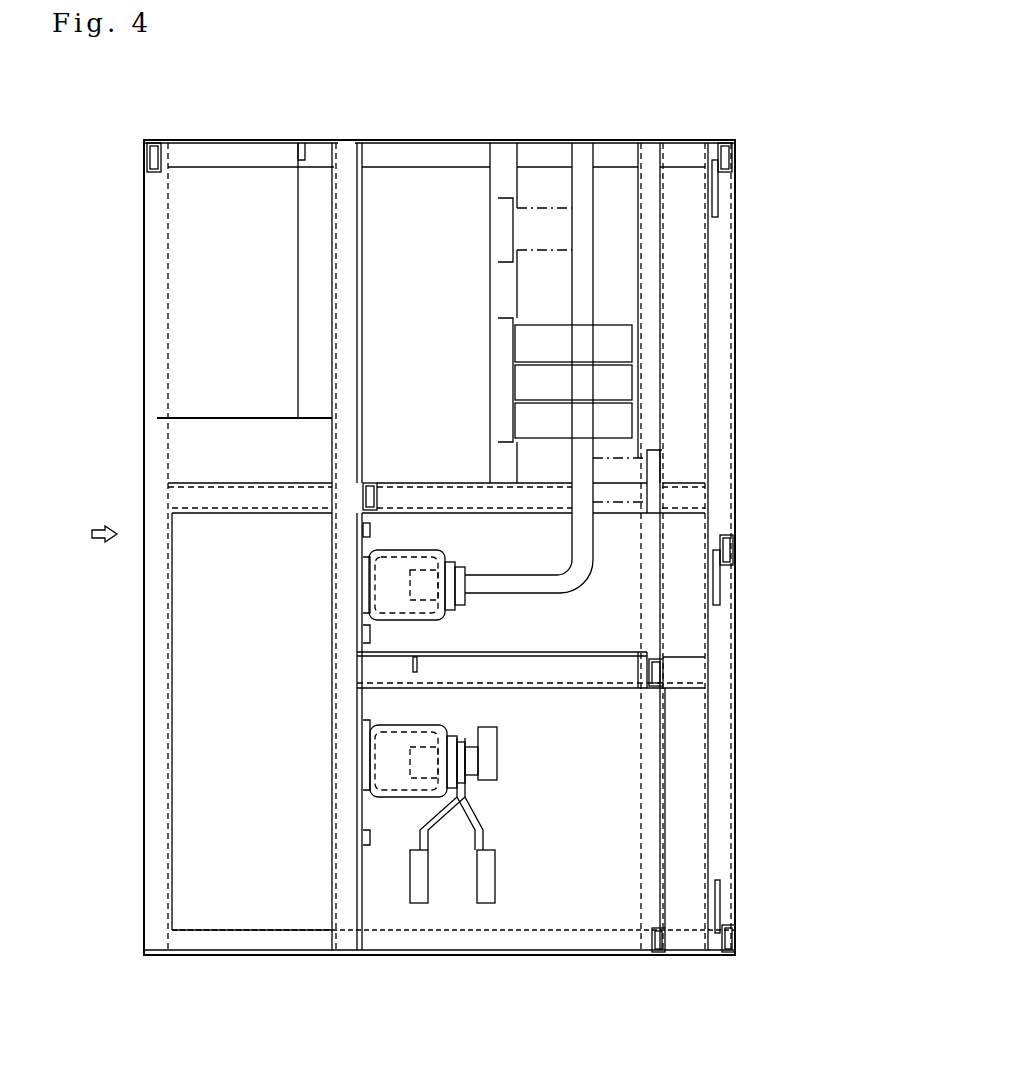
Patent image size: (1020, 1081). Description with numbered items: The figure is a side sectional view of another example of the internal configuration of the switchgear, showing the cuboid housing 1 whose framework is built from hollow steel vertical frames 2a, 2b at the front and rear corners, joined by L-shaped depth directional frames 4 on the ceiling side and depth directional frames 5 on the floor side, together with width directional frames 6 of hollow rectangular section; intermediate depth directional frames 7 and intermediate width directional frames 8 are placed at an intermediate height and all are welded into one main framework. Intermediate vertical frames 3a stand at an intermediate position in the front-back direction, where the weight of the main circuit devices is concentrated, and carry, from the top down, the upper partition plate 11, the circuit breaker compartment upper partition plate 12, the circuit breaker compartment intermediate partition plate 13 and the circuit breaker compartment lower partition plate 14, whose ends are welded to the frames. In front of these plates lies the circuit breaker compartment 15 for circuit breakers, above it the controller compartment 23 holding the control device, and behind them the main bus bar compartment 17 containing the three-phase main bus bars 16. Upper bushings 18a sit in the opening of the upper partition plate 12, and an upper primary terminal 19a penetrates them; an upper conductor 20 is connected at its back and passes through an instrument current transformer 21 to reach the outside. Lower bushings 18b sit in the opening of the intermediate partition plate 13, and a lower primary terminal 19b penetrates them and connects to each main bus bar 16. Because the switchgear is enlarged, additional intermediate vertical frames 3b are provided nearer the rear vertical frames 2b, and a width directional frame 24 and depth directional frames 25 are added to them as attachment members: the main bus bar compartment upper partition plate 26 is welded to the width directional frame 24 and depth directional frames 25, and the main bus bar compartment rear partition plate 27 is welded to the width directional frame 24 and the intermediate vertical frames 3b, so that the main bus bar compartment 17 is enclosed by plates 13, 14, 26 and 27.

The housing 1 is at (150, 127).
The vertical frame 2a is at (144, 372).
The vertical frame 2b is at (734, 245).
The intermediate vertical frame 3a is at (332, 210).
The intermediate vertical frame 3b is at (663, 345).
The depth directional frame 4 is at (442, 140).
The depth directional frame 5 is at (305, 957).
The width directional frame 6 is at (152, 156).
The intermediate depth directional frame 7 is at (227, 482).
The intermediate width directional frame 8 is at (377, 483).
The upper partition plate 11 is at (357, 336).
The circuit breaker compartment upper partition plate 12 is at (368, 532).
The circuit breaker compartment intermediate partition plate 13 is at (360, 692).
The circuit breaker compartment lower partition plate 14 is at (360, 890).
The circuit breaker compartment 15 is at (208, 752).
The main bus bar 16 is at (495, 890).
The main bus bar compartment 17 is at (557, 835).
The upper bushing 18a is at (425, 545).
The lower bushing 18b is at (425, 720).
The upper primary terminal 19a is at (410, 587).
The lower primary terminal 19b is at (410, 787).
The upper conductor 20 is at (595, 558).
The instrument current transformer 21 is at (625, 418).
The controller compartment 23 is at (205, 233).
The width directional frame 24 is at (670, 670).
The depth directional frame 25 is at (553, 683).
The main bus bar compartment upper partition plate 26 is at (595, 652).
The main bus bar compartment rear partition plate 27 is at (677, 730).